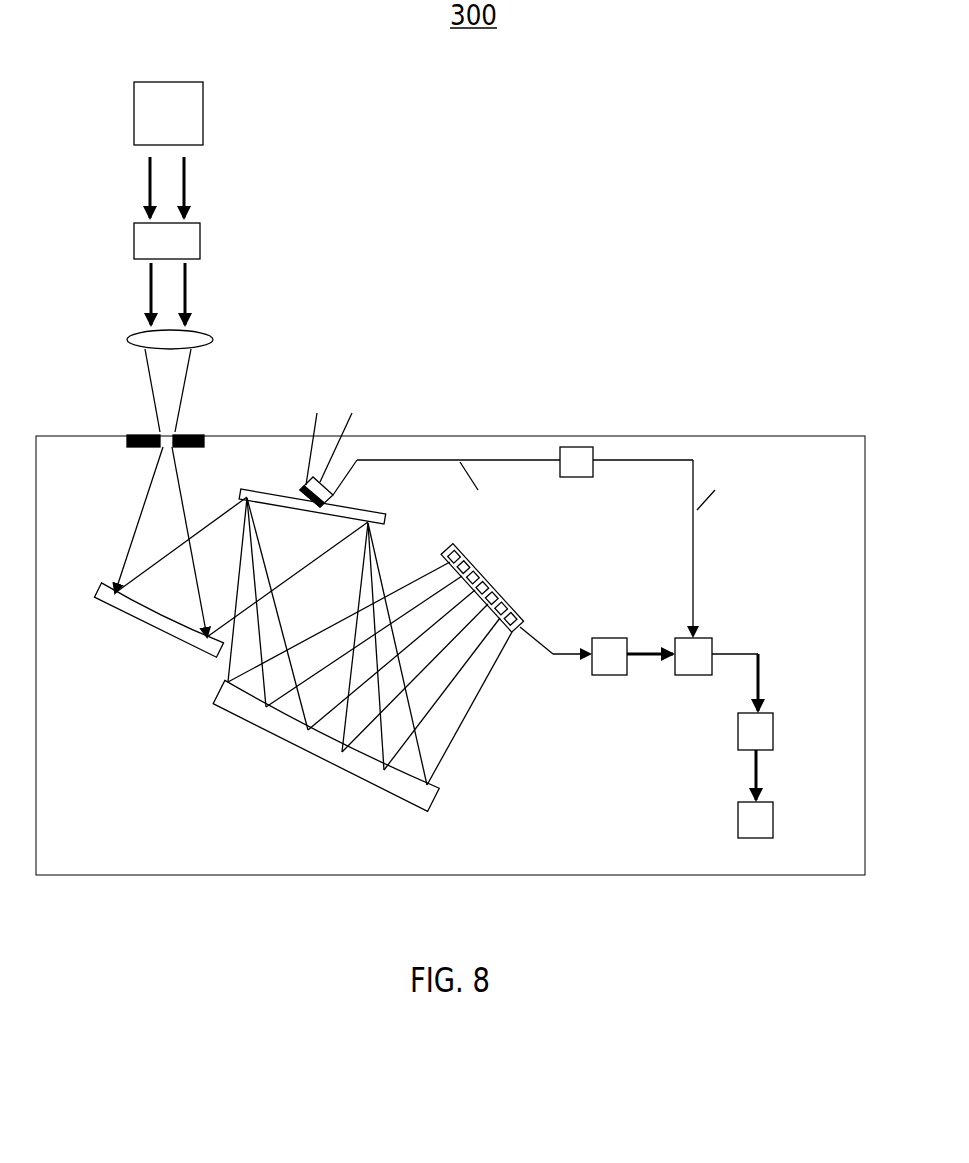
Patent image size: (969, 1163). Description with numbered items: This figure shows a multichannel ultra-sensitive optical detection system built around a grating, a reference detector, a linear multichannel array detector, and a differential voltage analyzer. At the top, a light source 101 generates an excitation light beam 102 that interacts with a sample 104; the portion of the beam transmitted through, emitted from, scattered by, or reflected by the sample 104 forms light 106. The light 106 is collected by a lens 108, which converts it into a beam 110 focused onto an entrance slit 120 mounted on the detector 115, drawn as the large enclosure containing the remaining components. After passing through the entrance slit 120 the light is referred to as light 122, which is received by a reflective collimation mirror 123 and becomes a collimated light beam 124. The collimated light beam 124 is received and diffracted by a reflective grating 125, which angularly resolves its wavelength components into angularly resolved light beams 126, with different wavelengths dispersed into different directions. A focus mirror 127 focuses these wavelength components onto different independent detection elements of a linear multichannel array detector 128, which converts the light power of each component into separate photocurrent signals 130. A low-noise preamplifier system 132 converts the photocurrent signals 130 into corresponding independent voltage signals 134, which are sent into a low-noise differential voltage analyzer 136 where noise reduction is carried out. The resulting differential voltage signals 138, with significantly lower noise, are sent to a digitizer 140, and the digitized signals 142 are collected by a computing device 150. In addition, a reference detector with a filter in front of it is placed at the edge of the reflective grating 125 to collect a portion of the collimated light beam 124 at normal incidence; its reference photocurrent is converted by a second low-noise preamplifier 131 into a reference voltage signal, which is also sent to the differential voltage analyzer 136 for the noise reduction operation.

The light source 101 is at (176, 126).
The excitation light beam 102 is at (172, 190).
The sample 104 is at (178, 243).
The light 106 is at (172, 298).
The lens 108 is at (212, 336).
The beam 110 is at (188, 387).
The detector 115 is at (522, 435).
The entrance slit 120 is at (145, 436).
The light 122 is at (148, 543).
The reflective collimation mirror 123 is at (155, 623).
The collimated light beam 124 is at (217, 560).
The reflective grating 125 is at (238, 493).
The angularly resolved light beams 126 is at (315, 612).
The focus mirror 127 is at (307, 745).
The linear multichannel array detector 128 is at (500, 598).
The photocurrent signals 130 is at (560, 660).
The low-noise preamplifier system 131 is at (573, 470).
The low-noise preamplifier system 132 is at (607, 655).
The voltage signals 134 is at (650, 660).
The low-noise differential voltage analyzer 136 is at (695, 655).
The differential voltage signals 138 is at (757, 650).
The digitizer 140 is at (765, 728).
The digitized signals 142 is at (755, 772).
The computing device 150 is at (765, 815).